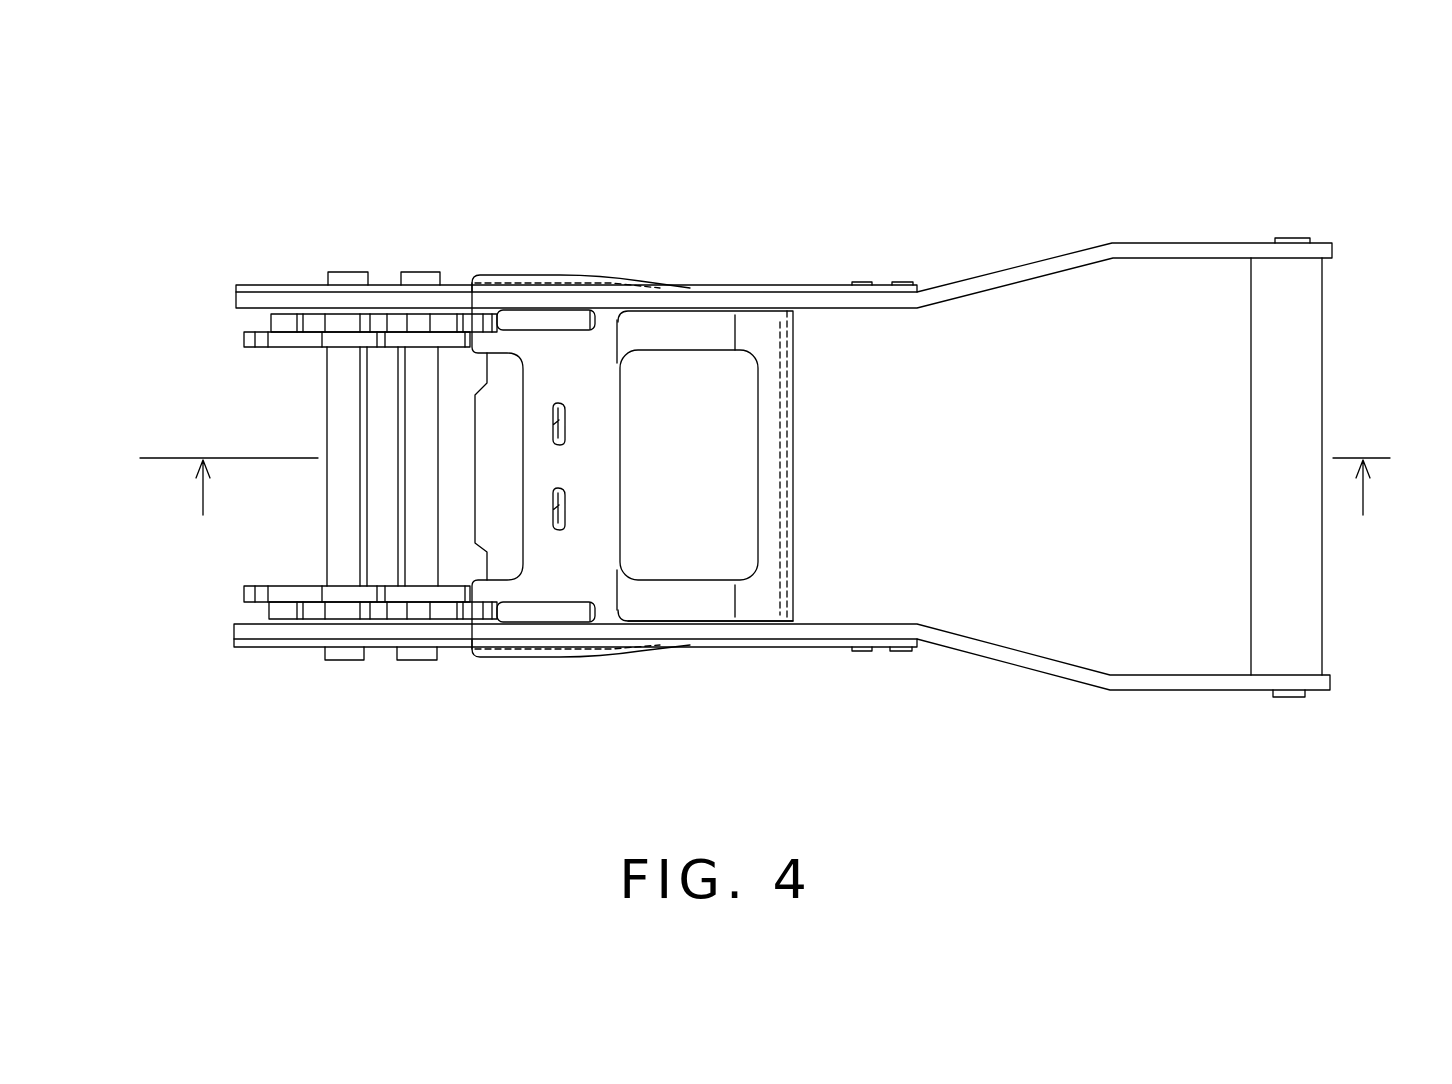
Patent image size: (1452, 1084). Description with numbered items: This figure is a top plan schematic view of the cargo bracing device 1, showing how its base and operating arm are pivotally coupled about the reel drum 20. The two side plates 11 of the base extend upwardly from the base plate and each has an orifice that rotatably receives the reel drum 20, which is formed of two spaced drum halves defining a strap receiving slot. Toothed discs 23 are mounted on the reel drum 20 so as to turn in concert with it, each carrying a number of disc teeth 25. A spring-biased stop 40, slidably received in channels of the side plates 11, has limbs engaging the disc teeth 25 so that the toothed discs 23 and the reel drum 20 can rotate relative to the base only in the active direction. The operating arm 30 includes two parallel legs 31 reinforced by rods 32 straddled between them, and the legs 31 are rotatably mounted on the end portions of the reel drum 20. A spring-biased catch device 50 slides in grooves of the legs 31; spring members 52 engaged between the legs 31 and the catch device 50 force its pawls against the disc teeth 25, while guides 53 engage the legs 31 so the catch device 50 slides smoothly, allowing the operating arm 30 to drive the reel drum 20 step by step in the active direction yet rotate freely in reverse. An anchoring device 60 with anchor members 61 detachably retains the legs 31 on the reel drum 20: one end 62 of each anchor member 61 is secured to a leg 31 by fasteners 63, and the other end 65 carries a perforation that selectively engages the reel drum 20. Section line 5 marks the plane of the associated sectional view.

The cargo bracing device 1 is at (997, 198).
The section line 5- 5 is at (768, 498).
The side plates 11 is at (288, 348).
The reel drum 20 is at (350, 362).
The toothed discs 23 is at (298, 318).
The disc teeth 25 is at (358, 607).
The operating arm 30 is at (1212, 257).
The legs 31 is at (1070, 672).
The rods 32 is at (1313, 333).
The spring-biased stop 40 is at (492, 512).
The spring-biased catch device 50 is at (555, 580).
The spring members 52 is at (563, 414).
The guides 53 is at (545, 318).
The anchoring device 60 is at (672, 650).
The anchor members 61 is at (760, 650).
The end 62 is at (917, 285).
The fasteners 63 is at (893, 650).
The other end 65 is at (240, 283).